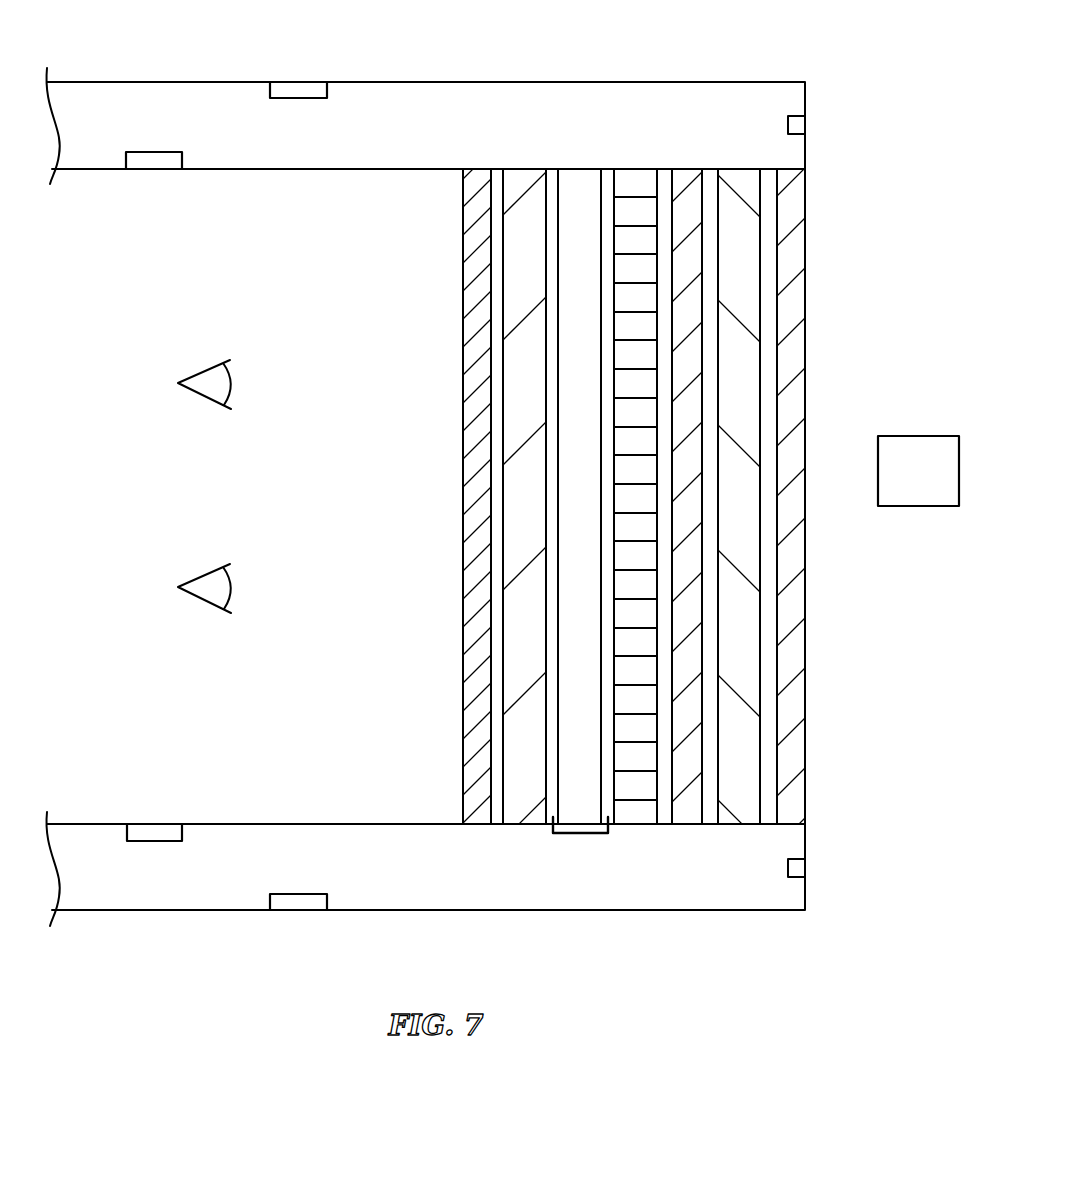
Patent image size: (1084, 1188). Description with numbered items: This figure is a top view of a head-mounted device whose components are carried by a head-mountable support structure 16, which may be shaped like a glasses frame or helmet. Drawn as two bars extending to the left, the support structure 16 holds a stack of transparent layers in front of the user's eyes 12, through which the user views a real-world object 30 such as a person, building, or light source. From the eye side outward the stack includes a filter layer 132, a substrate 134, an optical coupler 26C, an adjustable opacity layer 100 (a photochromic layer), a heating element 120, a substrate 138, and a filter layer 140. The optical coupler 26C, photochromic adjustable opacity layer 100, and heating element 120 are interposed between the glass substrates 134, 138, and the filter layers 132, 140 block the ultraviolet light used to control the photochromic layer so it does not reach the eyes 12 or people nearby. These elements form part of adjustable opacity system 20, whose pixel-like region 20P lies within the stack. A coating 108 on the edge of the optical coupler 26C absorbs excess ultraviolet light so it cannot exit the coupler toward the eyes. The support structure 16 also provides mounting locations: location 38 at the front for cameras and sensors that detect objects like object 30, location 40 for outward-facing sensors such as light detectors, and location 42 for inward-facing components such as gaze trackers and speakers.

The user eyes 12 is at (206, 370).
The support structure 16 is at (387, 94).
The adjustable opacity system 20 is at (637, 114).
The pixel array 20P is at (632, 508).
The optical coupler 26C is at (584, 175).
The object 30 is at (922, 434).
The location 38 is at (805, 125).
The location 40 is at (302, 88).
The location 42 is at (155, 163).
The adjustable opacity layer 100 is at (615, 162).
The coating 108 is at (578, 833).
The heating element 120 is at (688, 175).
The filter layer 132 is at (478, 175).
The substrate 134 is at (528, 175).
The substrate 138 is at (744, 175).
The filter layer 140 is at (800, 197).